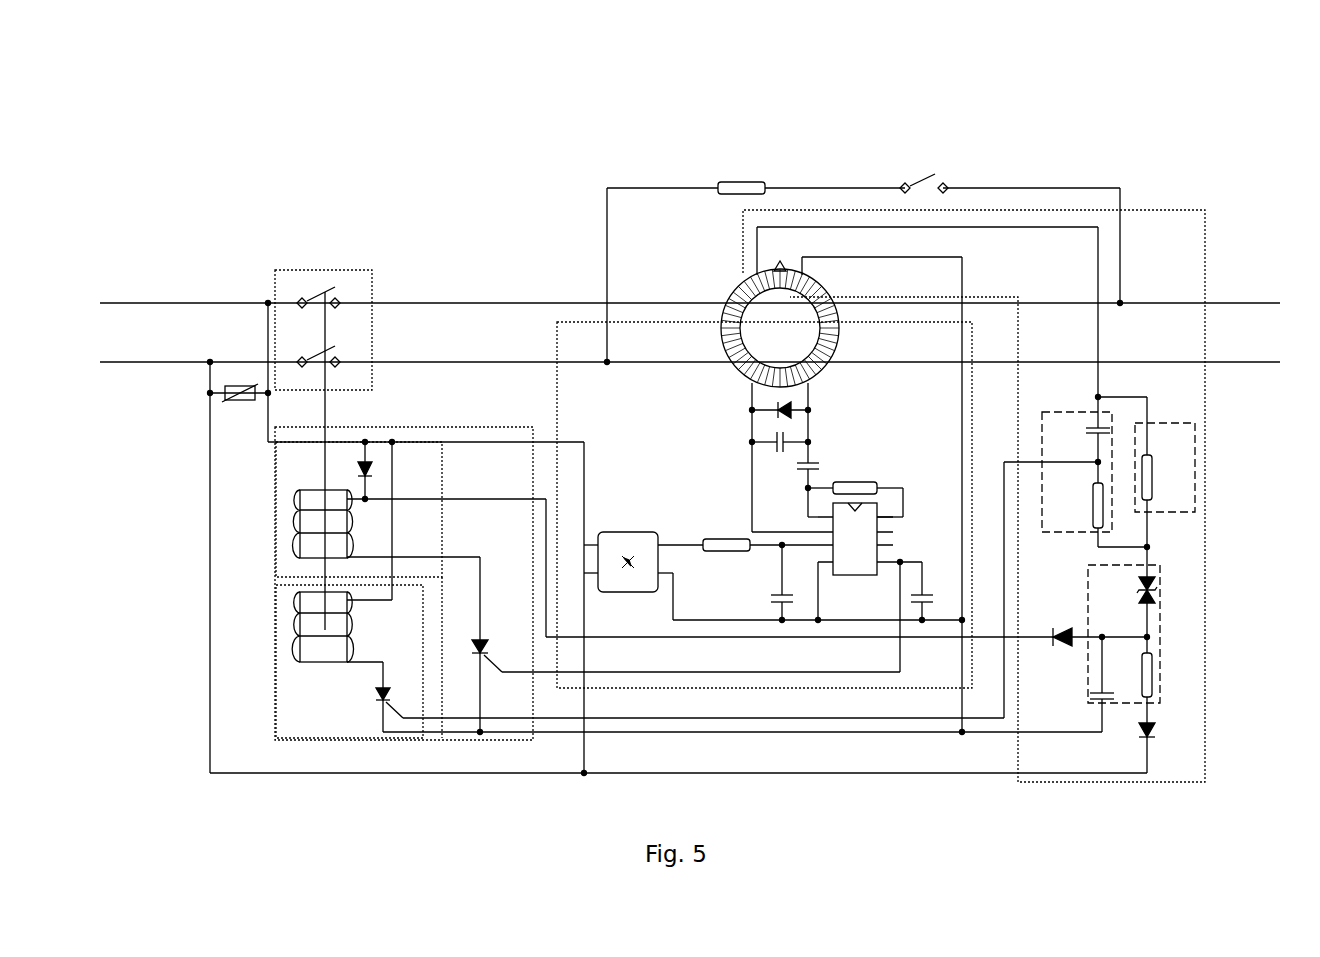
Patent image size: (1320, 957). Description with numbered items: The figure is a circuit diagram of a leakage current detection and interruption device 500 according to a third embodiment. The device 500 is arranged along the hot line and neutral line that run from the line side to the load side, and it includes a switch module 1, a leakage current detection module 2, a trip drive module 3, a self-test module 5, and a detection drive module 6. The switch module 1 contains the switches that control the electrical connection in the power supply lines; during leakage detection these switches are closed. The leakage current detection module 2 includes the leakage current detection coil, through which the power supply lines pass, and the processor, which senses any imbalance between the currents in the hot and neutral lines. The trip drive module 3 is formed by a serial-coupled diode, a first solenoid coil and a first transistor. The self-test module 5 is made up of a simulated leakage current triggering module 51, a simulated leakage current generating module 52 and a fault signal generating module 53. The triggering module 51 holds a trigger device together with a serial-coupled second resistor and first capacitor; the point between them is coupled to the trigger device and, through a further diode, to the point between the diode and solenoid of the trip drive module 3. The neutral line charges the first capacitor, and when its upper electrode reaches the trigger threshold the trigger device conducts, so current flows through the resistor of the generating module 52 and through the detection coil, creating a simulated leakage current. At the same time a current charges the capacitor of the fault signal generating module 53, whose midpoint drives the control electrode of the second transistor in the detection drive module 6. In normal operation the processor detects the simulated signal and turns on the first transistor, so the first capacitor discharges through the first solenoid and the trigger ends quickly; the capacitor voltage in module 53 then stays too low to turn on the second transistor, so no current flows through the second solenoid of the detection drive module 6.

The leakage current detection and interruption device 500 is at (1308, 78).
The switch module 1 is at (343, 268).
The leakage current detection module 2 is at (622, 322).
The trip drive module 3 is at (422, 427).
The self-test module 5 is at (1160, 210).
The detection drive module 6 is at (276, 622).
The simulated leakage current triggering module 51 is at (1158, 578).
The simulated leakage current generating module 52 is at (1196, 435).
The fault signal generating module 53 is at (1070, 412).